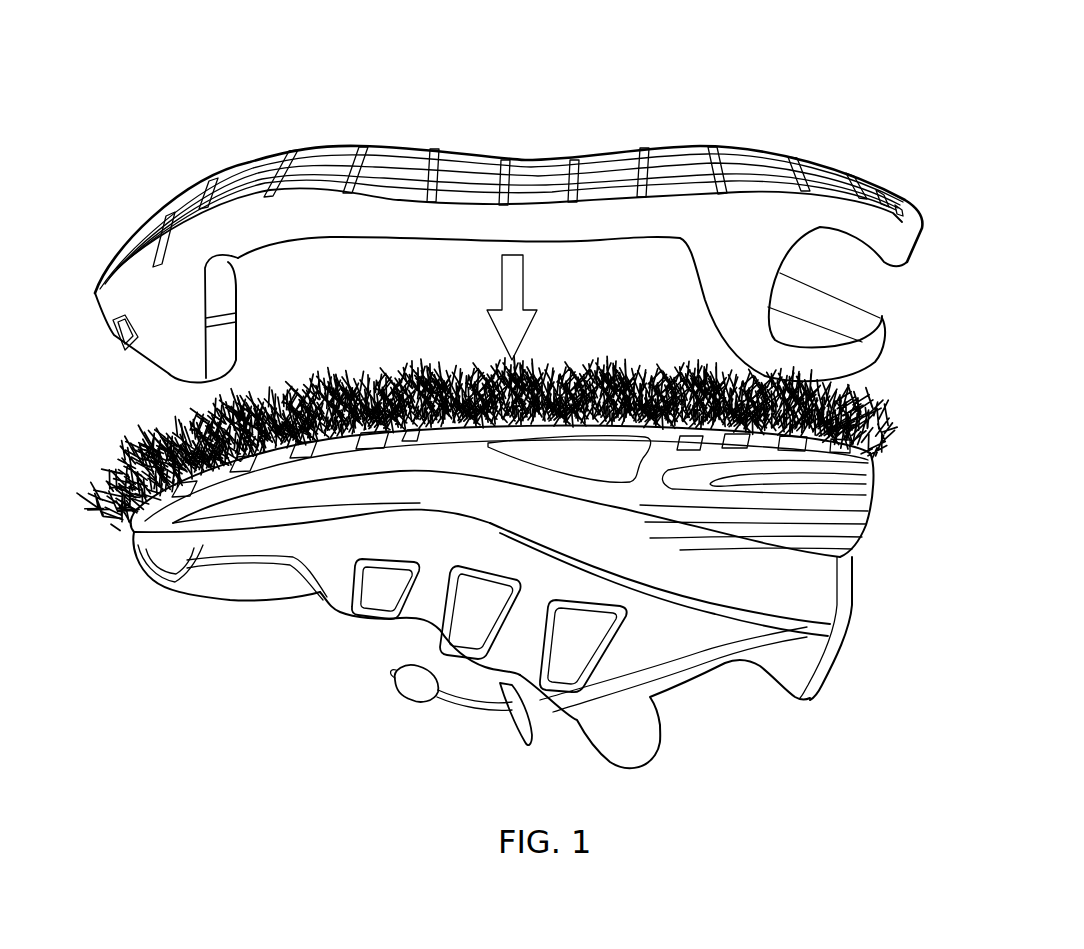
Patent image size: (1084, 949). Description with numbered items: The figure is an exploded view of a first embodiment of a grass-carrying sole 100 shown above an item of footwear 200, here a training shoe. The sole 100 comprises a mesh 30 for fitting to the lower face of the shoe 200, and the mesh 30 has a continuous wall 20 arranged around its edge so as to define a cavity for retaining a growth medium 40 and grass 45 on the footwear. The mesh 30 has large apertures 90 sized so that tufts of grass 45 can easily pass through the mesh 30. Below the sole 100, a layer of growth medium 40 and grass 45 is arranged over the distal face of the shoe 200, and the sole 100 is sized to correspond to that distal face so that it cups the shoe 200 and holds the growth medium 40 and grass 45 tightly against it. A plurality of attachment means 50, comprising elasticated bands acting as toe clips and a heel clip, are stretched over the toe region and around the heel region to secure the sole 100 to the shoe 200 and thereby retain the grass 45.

The sole 100 is at (525, 146).
The continuous wall 20 is at (175, 255).
The mesh 30 is at (258, 158).
The apertures 90 is at (383, 192).
The attachment means 50 is at (170, 373).
The item of footwear 200 is at (335, 573).
The grass 45 is at (157, 457).
The growth medium 40 is at (142, 515).